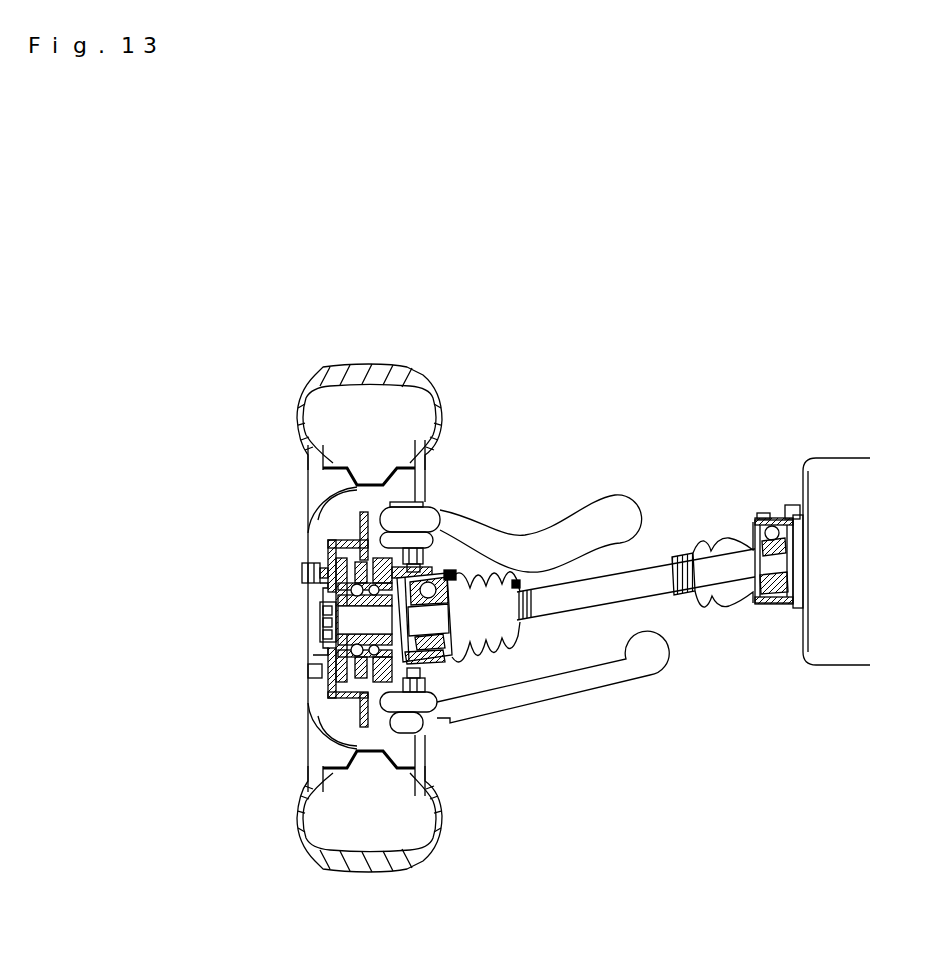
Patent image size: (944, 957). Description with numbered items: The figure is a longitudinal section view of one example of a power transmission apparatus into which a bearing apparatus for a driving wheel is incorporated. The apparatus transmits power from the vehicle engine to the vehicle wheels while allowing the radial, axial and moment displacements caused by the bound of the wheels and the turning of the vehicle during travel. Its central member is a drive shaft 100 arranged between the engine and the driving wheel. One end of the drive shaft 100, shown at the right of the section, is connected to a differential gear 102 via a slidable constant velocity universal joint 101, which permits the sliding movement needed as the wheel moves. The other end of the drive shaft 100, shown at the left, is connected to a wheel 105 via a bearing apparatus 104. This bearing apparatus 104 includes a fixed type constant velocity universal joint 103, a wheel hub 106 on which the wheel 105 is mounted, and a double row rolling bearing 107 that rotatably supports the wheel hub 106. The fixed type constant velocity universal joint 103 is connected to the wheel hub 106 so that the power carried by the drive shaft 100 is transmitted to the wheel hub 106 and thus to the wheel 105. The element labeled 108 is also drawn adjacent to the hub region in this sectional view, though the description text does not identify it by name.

The drive shaft 100 is at (574, 615).
The slidable constant velocity universal joint 101 is at (751, 510).
The differential gear 102 is at (829, 470).
The fixed type constant velocity universal joint 103 is at (465, 655).
The bearing apparatus 104 is at (363, 558).
The wheel 105 is at (430, 480).
The wheel hub 106 is at (328, 644).
The double row rolling bearing 107 is at (335, 681).
The brake rotor 108 is at (330, 712).